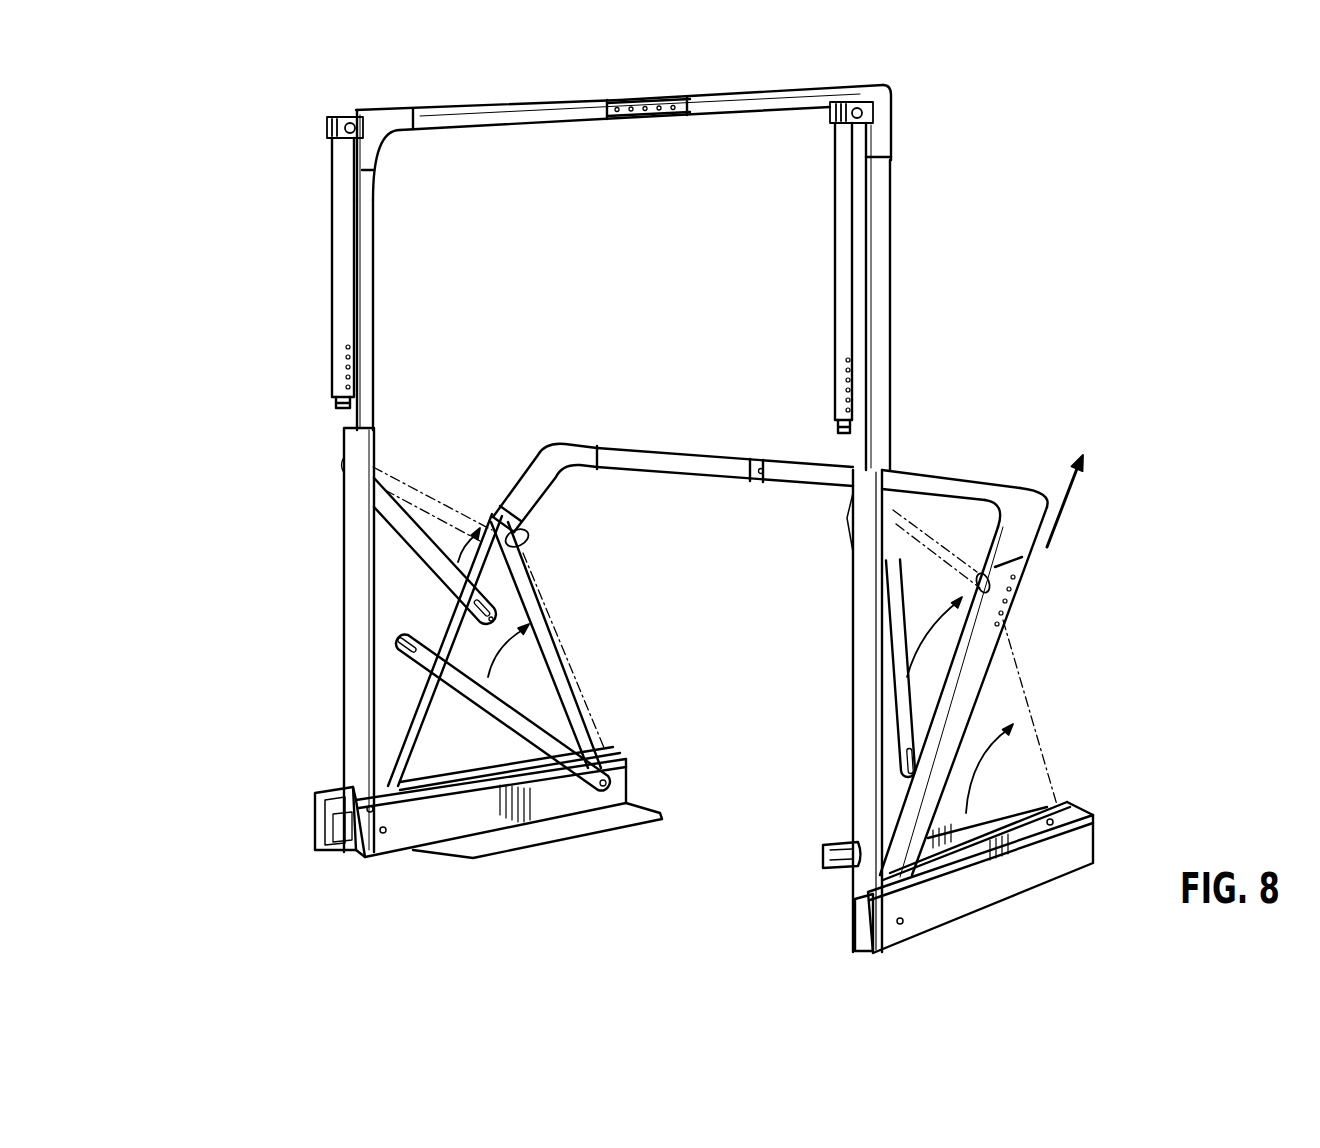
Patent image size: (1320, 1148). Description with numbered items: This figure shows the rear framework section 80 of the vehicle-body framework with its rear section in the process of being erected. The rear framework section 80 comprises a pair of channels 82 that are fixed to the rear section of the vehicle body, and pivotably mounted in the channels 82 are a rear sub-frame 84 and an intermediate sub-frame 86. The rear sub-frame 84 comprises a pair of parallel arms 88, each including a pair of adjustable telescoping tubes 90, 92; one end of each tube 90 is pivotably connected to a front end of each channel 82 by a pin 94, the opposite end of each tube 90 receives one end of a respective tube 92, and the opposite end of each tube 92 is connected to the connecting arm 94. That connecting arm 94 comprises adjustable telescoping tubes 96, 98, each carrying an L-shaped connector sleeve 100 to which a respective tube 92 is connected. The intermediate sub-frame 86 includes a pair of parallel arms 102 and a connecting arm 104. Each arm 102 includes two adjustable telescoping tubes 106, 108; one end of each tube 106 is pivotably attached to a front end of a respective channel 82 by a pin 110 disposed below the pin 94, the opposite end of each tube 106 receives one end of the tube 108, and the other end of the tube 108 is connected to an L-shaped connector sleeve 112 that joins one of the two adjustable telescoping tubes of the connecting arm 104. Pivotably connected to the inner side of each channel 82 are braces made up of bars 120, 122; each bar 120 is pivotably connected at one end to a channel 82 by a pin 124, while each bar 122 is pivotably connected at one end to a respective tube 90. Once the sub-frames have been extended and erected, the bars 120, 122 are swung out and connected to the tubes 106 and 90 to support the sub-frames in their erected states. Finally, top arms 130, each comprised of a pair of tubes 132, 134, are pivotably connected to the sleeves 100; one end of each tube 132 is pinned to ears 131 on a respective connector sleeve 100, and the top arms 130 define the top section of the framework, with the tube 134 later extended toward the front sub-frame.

The rear framework section 80 is at (1008, 371).
The channels 82 is at (704, 856).
The rear sub-frame 84 is at (595, 529).
The intermediate sub-frame 86 is at (1014, 600).
The parallel arms 88 is at (343, 508).
The tube 90 is at (344, 604).
The tube 92 is at (373, 330).
The pin 94 is at (690, 116).
The adjustable telescoping tube 96 is at (500, 121).
The adjustable telescoping tube 98 is at (752, 101).
The L-shaped connector sleeve 100 is at (385, 122).
The parallel arms 102 is at (824, 663).
The connecting arm 104 is at (770, 449).
The tube 106 is at (430, 735).
The tube 108 is at (517, 492).
The pin 110 is at (383, 833).
The L-shaped connector sleeve 112 is at (580, 452).
The bar 120 is at (575, 702).
The bar 122 is at (445, 585).
The pin 124 is at (630, 790).
The top arms 130 is at (333, 306).
The ears 131 is at (327, 128).
The tube 132 is at (526, 278).
The tube 134 is at (834, 430).